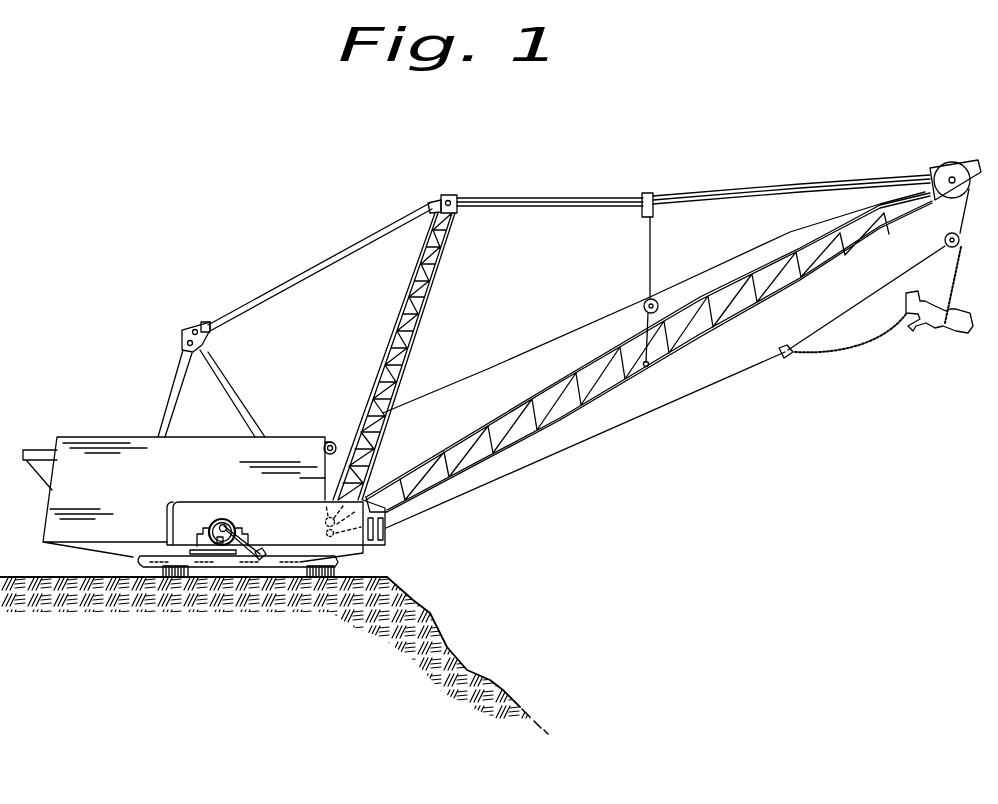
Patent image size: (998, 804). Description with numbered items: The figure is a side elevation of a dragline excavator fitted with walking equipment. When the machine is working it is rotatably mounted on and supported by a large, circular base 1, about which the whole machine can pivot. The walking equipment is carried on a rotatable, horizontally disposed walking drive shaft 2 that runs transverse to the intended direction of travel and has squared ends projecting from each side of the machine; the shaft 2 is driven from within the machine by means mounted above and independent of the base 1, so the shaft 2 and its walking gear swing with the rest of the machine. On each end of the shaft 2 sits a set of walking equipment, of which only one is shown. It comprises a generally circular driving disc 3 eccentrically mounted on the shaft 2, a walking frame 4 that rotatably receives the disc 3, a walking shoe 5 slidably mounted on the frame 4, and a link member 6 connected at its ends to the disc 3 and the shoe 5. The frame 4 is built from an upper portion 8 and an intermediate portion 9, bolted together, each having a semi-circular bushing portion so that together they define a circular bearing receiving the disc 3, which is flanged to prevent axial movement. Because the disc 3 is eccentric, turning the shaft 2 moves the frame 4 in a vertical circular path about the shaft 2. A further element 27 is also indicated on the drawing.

The base 1 is at (336, 567).
The walking drive shaft 2 is at (224, 545).
The disc 3 is at (224, 510).
The walking frame 4 is at (195, 538).
The walking shoe 5 is at (121, 562).
The link member 6 is at (252, 552).
The upper portion 8 is at (225, 527).
The intermediate portion 9 is at (236, 554).
The cable 27 is at (264, 557).